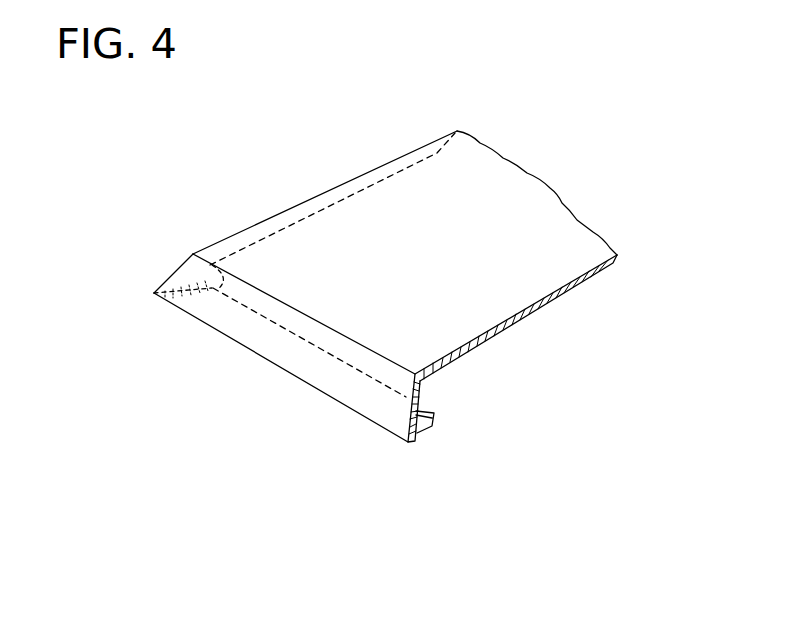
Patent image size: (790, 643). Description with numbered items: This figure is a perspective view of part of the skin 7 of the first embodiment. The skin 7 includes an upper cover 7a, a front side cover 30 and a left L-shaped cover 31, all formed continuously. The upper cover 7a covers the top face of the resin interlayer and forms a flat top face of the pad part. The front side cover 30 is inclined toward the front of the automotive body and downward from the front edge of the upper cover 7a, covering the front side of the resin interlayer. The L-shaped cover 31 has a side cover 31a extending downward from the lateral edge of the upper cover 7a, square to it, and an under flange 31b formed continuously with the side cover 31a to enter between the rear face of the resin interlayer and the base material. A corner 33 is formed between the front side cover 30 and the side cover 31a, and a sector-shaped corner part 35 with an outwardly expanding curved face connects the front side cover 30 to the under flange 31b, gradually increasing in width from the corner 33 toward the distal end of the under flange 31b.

The skin 7 is at (565, 200).
The upper cover 7a is at (477, 203).
The front side cover 30 is at (300, 200).
The L-shaped cover 31 is at (309, 457).
The side cover 31a is at (365, 390).
The under flange 31b is at (427, 425).
The corner 33 is at (152, 294).
The sector-shaped corner part 35 is at (188, 300).